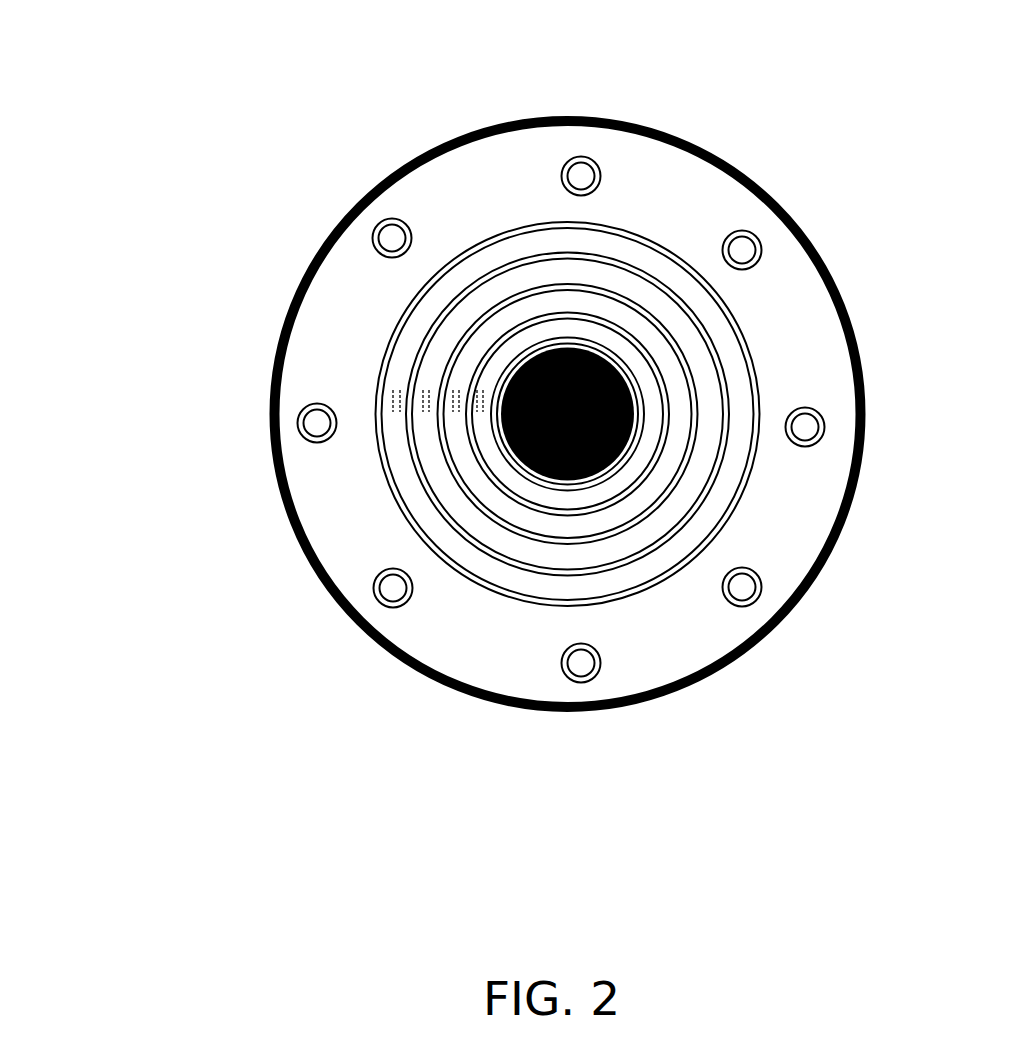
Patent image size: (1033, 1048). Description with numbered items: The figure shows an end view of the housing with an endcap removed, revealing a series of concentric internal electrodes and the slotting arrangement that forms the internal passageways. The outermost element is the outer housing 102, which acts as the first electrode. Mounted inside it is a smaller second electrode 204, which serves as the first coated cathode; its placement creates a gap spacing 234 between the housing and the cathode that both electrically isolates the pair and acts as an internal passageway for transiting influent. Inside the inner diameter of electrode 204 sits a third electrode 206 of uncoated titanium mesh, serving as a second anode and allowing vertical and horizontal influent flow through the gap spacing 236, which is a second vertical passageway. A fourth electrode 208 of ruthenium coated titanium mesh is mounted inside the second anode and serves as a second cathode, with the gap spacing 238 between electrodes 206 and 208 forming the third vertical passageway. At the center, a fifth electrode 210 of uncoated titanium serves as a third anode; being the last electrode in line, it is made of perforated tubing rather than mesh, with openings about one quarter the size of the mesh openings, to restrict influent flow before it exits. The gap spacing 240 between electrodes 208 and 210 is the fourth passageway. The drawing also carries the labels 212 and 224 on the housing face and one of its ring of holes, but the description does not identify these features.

The outer housing 102 is at (653, 240).
The second electrode 204 is at (686, 296).
The third electrode 206 is at (697, 413).
The fourth electrode 208 is at (655, 460).
The fifth electrode 210 is at (570, 492).
The flange face 212 is at (312, 487).
The bolt holes 224 is at (378, 597).
The gap spacing 234 is at (480, 390).
The gap spacing 236 is at (426, 401).
The gap spacing 238 is at (456, 401).
The gap spacing 240 is at (480, 401).